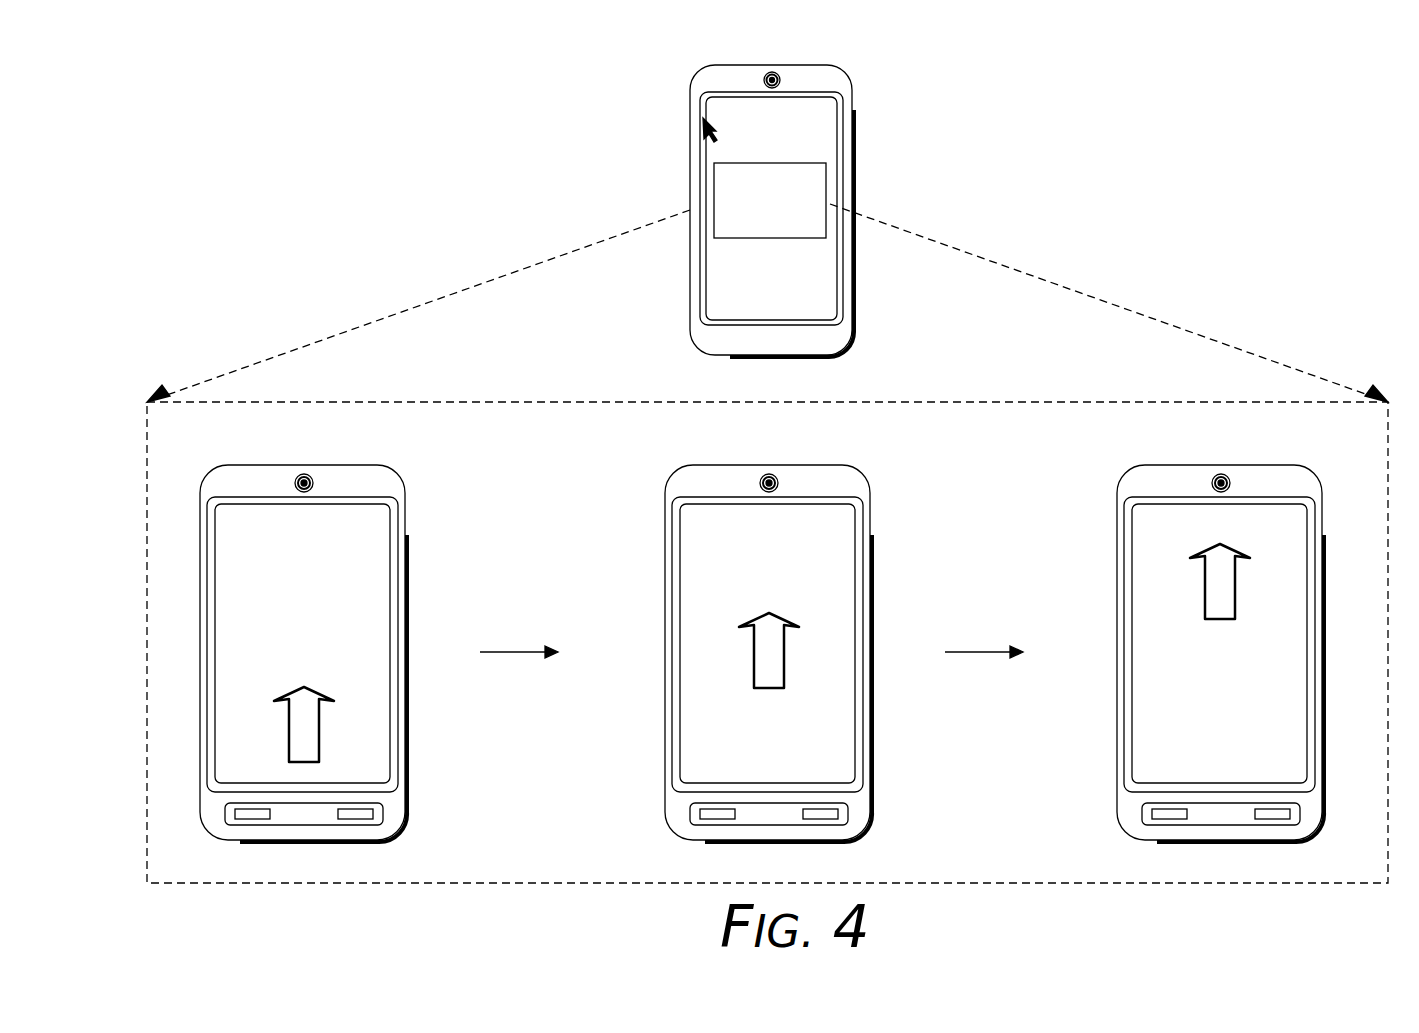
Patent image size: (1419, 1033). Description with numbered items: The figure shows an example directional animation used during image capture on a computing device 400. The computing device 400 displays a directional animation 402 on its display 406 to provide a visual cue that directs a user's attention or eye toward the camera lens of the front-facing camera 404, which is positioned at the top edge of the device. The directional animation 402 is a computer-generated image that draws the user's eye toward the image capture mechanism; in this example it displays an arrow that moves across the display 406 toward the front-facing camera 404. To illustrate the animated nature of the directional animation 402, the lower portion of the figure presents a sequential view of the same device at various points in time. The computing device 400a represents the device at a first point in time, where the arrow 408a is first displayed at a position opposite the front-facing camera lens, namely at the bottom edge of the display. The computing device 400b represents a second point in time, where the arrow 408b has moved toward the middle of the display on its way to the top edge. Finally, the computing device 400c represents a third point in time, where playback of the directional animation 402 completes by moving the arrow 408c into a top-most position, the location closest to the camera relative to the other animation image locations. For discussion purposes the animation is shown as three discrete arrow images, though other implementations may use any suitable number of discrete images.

The computing device 400 is at (826, 70).
The directional animation 402 is at (781, 163).
The front-facing camera 404 is at (766, 73).
The display 406 is at (701, 113).
The computing device at a first point in time 400a is at (306, 466).
The computing device at a second point in time 400b is at (770, 466).
The computing device at a third point in time 400c is at (1221, 466).
The arrow 408a is at (305, 686).
The arrow 408b is at (770, 612).
The arrow 408c is at (1221, 543).